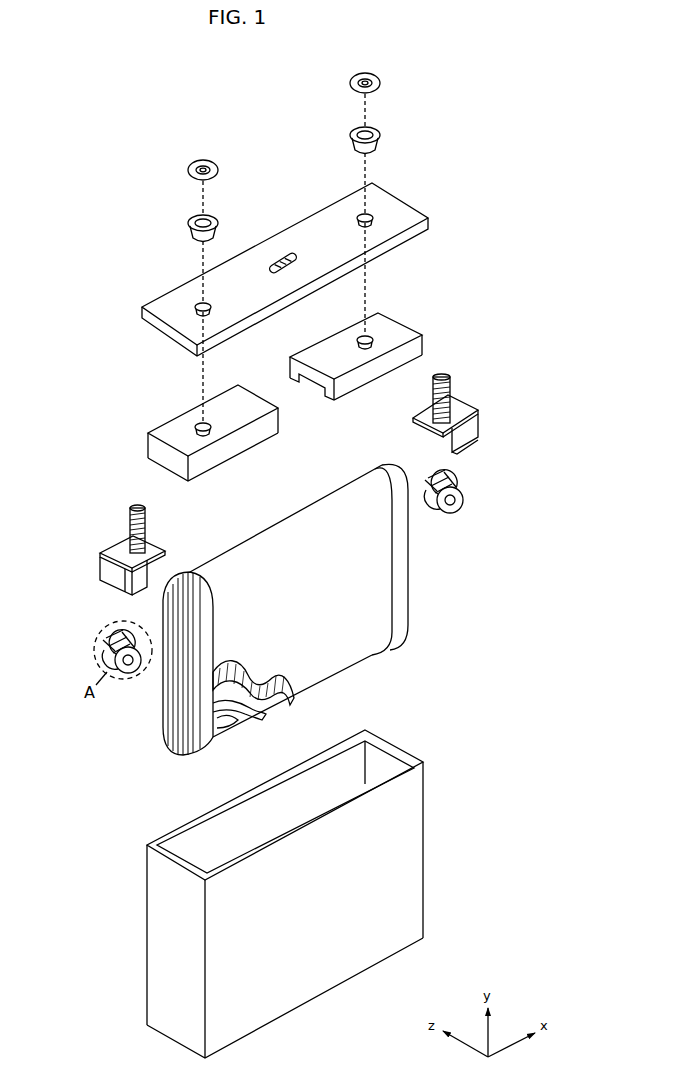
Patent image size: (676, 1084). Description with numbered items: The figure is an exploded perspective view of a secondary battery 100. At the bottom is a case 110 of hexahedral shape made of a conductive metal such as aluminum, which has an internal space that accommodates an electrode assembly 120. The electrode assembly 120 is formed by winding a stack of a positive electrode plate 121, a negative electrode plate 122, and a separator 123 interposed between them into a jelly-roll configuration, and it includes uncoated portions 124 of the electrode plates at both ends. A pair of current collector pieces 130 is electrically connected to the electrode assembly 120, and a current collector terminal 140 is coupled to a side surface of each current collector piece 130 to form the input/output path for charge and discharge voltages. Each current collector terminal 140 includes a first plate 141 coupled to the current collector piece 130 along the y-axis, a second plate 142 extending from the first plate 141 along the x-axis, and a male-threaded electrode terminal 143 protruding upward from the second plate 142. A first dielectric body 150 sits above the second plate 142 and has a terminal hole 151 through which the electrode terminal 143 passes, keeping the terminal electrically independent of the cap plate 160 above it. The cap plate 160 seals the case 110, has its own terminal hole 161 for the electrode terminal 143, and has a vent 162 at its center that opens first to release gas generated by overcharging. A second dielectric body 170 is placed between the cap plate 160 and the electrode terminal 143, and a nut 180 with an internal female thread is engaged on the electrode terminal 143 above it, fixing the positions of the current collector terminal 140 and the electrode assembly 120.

The secondary battery 100 is at (93, 100).
The case 110 is at (424, 826).
The electrode assembly 120 is at (326, 631).
The positive electrode plate 121 is at (228, 716).
The negative electrode plate 122 is at (287, 697).
The separator 123 is at (270, 707).
The uncoated portions 124 is at (203, 742).
The current collector piece 130 is at (473, 477).
The current collector terminal 140 is at (439, 394).
The first plate 141 is at (482, 423).
The second plate 142 is at (462, 418).
The electrode terminal 143 is at (441, 373).
The first dielectric body 150 is at (374, 337).
The terminal hole 151 is at (358, 336).
The cap plate 160 is at (300, 257).
The terminal hole 161 is at (360, 212).
The vent 162 is at (287, 253).
The second dielectric body 170 is at (382, 140).
The nut 180 is at (382, 86).